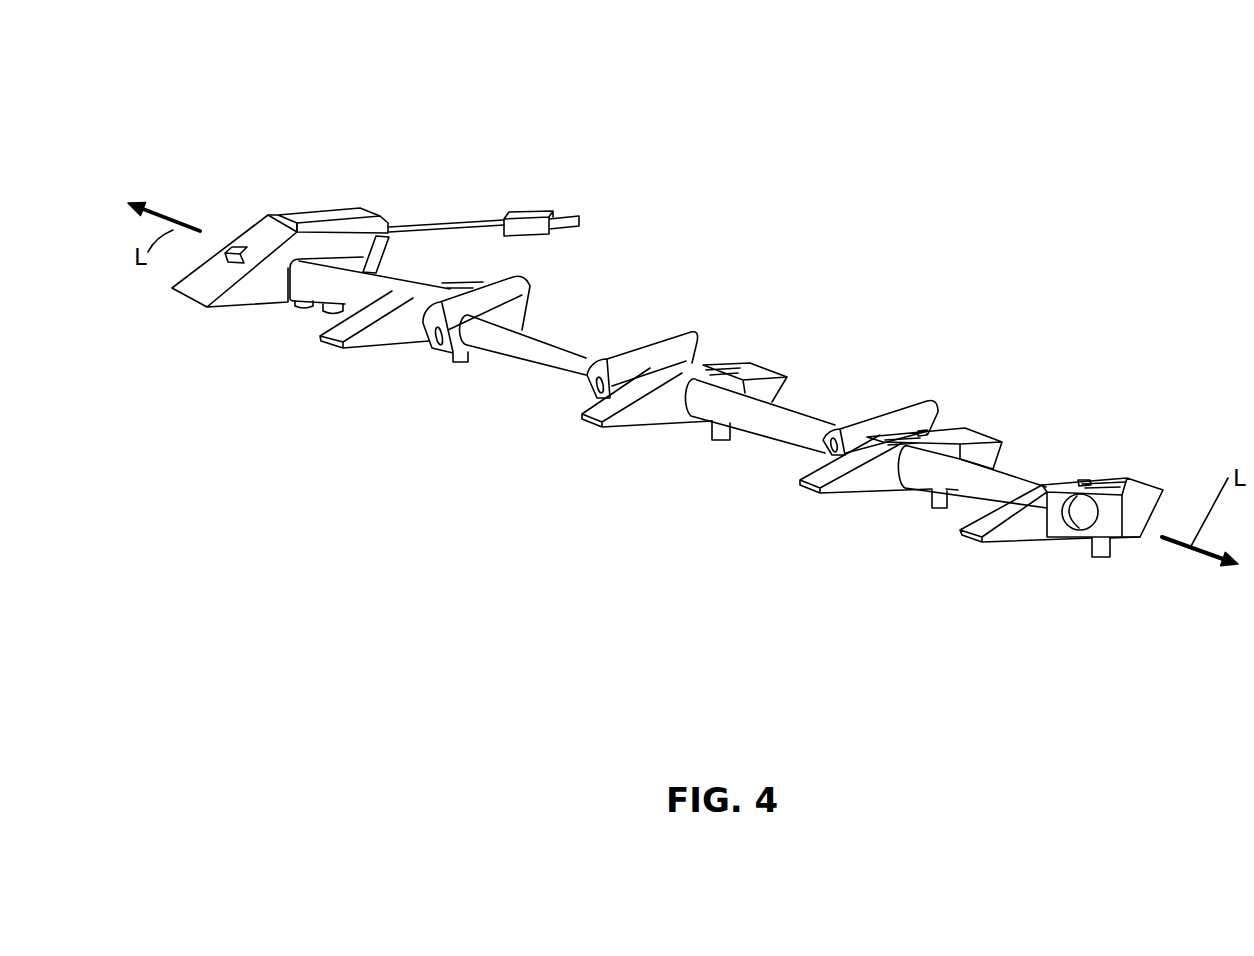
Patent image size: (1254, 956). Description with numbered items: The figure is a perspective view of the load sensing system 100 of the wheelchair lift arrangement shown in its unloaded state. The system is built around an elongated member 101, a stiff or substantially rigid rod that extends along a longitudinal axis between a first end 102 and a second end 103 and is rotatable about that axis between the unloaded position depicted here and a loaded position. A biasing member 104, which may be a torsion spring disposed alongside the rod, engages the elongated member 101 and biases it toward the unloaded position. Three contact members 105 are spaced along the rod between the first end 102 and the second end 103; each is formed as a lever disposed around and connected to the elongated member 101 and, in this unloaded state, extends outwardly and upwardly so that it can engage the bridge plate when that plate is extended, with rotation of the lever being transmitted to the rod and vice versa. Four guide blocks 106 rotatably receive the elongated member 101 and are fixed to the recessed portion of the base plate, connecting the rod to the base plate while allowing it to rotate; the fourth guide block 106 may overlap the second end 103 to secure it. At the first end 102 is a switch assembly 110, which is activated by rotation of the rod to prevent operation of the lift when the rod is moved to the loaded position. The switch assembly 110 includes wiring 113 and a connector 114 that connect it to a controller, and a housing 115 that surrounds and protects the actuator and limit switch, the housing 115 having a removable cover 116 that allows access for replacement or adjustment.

The load sensing system 100 is at (836, 199).
The elongated member 101 is at (553, 342).
The first end 102 is at (297, 276).
The second end 103 is at (1080, 528).
The biasing member 104 is at (380, 272).
The contact member 105 is at (513, 279).
The guide block 106 is at (358, 342).
The switch assembly 110 is at (223, 152).
The wiring 113 is at (476, 203).
The connector 114 is at (530, 200).
The housing 115 is at (211, 287).
The removable cover 116 is at (267, 222).